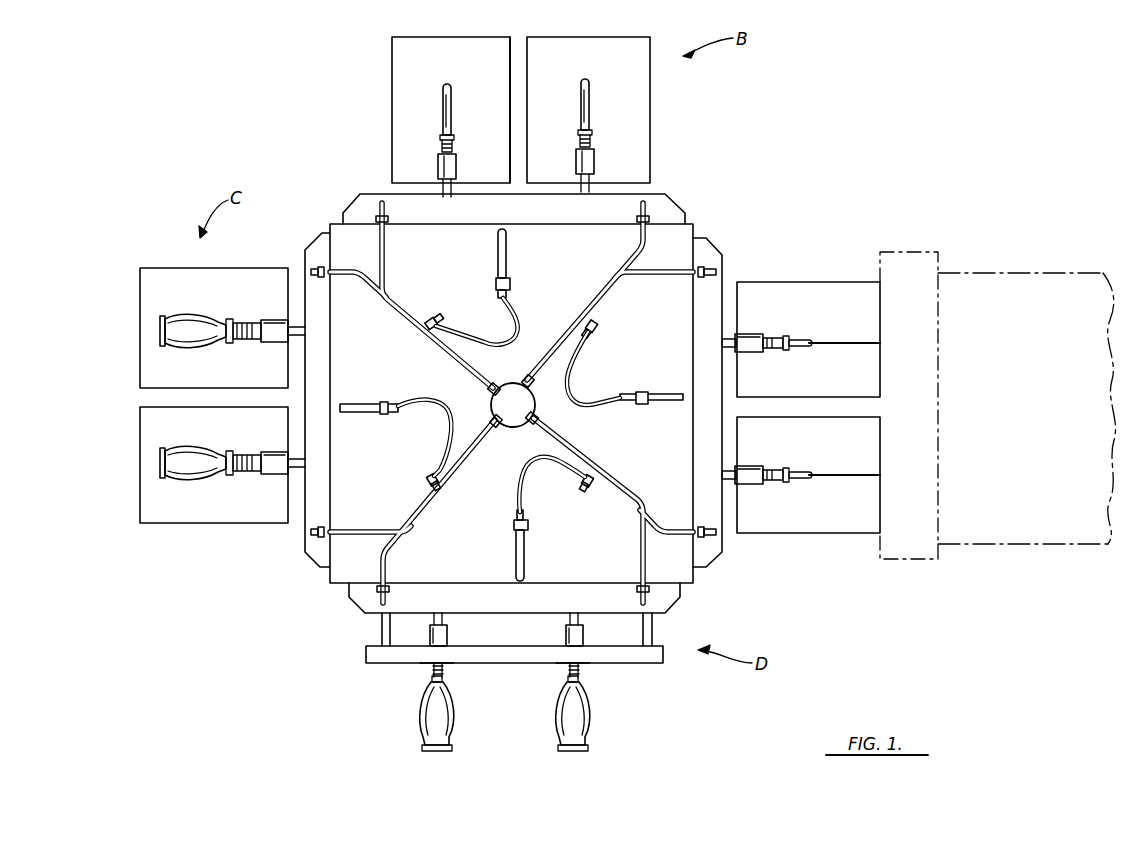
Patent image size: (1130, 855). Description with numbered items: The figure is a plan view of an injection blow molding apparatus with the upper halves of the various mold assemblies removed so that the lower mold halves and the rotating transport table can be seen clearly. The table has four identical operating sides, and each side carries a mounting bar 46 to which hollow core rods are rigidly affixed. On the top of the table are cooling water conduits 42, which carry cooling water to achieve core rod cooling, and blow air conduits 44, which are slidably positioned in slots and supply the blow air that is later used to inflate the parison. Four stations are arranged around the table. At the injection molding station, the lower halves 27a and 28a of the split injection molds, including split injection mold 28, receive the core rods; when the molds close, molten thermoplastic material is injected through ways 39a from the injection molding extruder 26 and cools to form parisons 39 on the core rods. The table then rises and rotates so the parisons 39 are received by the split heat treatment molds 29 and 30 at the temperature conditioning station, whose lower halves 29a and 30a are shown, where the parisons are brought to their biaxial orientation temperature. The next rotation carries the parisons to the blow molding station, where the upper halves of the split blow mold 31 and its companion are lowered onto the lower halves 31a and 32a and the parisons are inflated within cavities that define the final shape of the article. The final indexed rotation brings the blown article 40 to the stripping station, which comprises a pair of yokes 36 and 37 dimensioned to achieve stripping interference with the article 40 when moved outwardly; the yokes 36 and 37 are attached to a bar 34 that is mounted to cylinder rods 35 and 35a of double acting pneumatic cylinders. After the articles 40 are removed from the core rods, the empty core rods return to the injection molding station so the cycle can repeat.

The injection molding extruder 26 is at (1020, 278).
The lower half of split injection mold 27a is at (823, 563).
The split injection mold 28 is at (775, 282).
The lower half of split injection mold 28a is at (768, 298).
The split heat treatment mold 29 is at (650, 112).
The lower half of heat treatment mold 29a is at (622, 62).
The split heat treatment mold 30 is at (392, 108).
The lower half of heat treatment mold 30a is at (492, 62).
The split blow mold 31 is at (248, 268).
The lower half of blow mold 31a is at (252, 297).
The lower half of blow mold 32a is at (254, 430).
The bar 34 is at (532, 655).
The cylinder rod 35 is at (654, 632).
The cylinder rod 35a is at (330, 638).
The yoke 36 is at (455, 672).
The yoke 37 is at (592, 672).
The parison 39 is at (456, 118).
The way 39a is at (856, 317).
The article 40 is at (190, 345).
The cooling water conduit 42 is at (590, 304).
The blow air conduit 44 is at (510, 318).
The mounting bar 46 is at (498, 216).